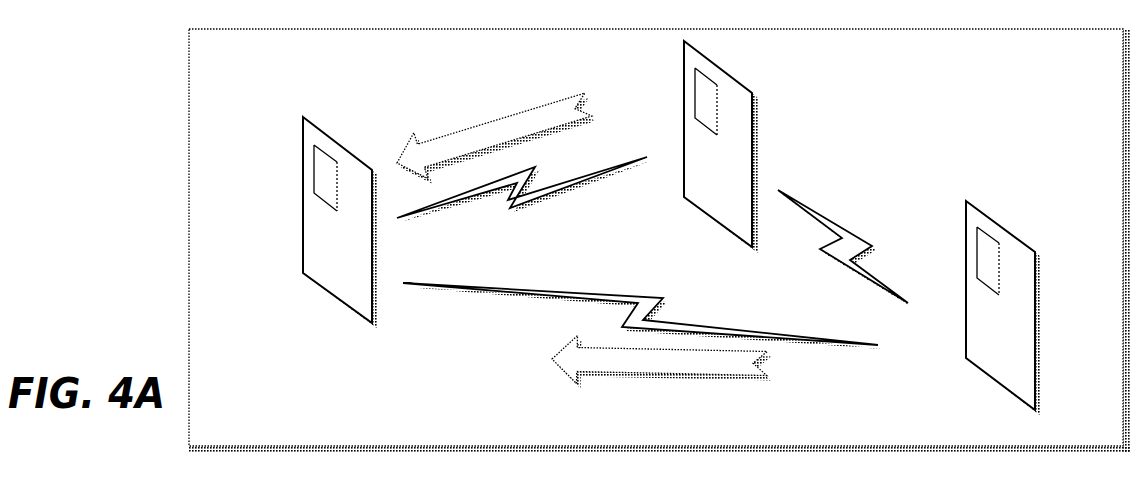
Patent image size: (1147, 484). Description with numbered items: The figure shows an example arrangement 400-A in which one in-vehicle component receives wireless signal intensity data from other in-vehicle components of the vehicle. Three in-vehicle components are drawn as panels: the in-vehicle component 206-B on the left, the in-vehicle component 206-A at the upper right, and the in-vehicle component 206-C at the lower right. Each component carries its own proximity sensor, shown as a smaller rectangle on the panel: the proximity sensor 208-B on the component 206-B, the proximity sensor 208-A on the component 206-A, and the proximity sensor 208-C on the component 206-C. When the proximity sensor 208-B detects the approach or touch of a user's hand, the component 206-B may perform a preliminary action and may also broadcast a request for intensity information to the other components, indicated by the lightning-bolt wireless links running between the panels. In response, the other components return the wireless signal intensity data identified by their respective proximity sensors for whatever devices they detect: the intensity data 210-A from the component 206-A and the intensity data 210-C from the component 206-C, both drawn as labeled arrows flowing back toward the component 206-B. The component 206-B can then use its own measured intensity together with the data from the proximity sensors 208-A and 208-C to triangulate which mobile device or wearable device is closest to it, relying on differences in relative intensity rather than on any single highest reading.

The environment / system 400-A is at (150, 70).
The in-vehicle component 206-A is at (684, 78).
The in-vehicle component 206-B is at (303, 155).
The in-vehicle component 206-C is at (966, 238).
The proximity sensor 208-A is at (695, 97).
The proximity sensor 208-B is at (314, 170).
The proximity sensor 208-C is at (977, 257).
The intensity data 210-A is at (490, 115).
The intensity data 210-C is at (665, 383).